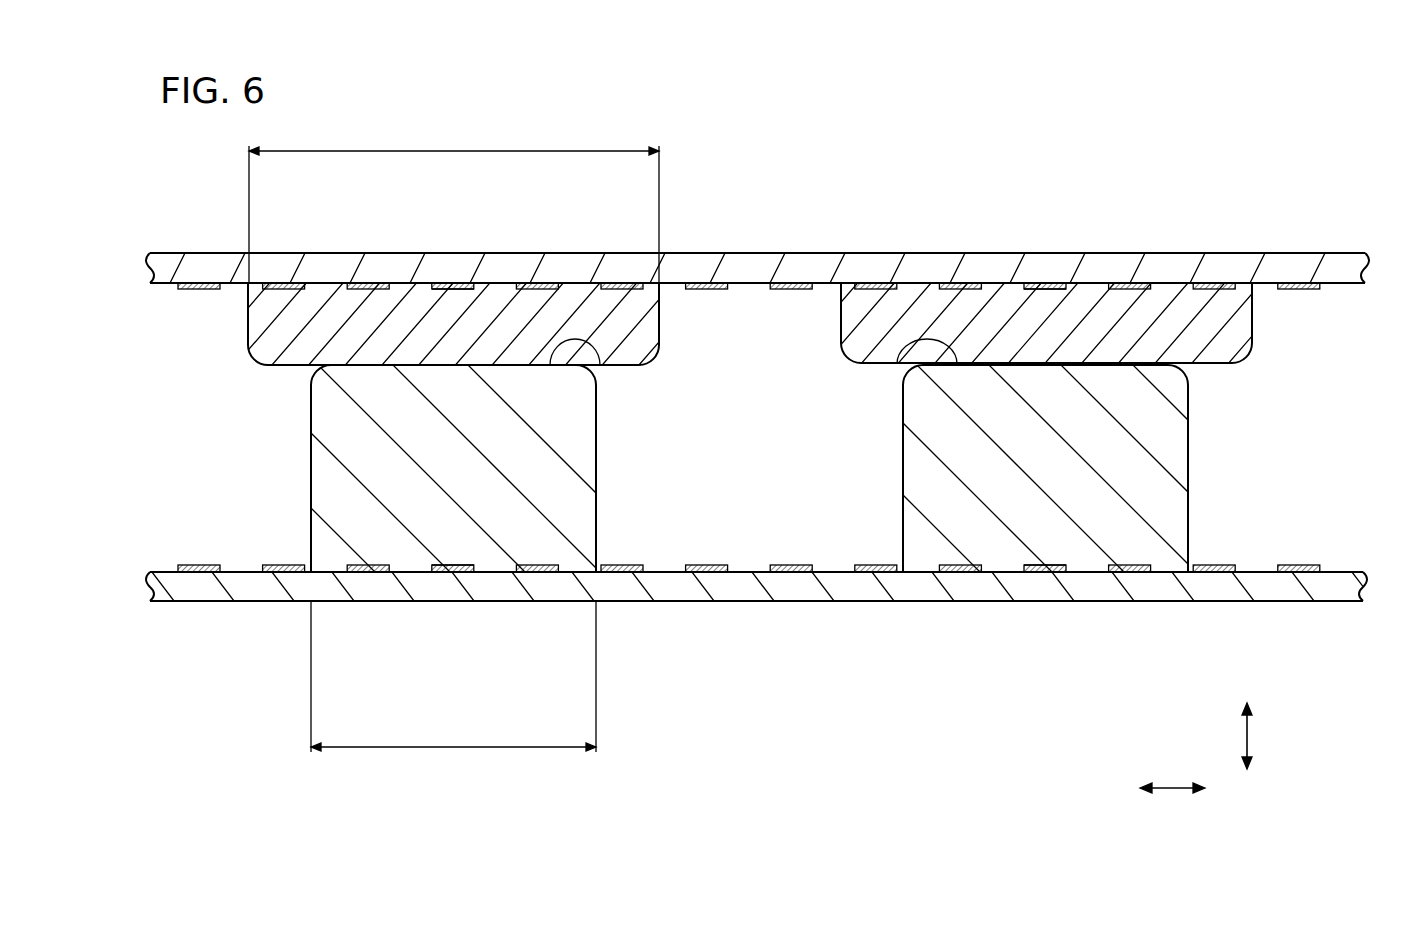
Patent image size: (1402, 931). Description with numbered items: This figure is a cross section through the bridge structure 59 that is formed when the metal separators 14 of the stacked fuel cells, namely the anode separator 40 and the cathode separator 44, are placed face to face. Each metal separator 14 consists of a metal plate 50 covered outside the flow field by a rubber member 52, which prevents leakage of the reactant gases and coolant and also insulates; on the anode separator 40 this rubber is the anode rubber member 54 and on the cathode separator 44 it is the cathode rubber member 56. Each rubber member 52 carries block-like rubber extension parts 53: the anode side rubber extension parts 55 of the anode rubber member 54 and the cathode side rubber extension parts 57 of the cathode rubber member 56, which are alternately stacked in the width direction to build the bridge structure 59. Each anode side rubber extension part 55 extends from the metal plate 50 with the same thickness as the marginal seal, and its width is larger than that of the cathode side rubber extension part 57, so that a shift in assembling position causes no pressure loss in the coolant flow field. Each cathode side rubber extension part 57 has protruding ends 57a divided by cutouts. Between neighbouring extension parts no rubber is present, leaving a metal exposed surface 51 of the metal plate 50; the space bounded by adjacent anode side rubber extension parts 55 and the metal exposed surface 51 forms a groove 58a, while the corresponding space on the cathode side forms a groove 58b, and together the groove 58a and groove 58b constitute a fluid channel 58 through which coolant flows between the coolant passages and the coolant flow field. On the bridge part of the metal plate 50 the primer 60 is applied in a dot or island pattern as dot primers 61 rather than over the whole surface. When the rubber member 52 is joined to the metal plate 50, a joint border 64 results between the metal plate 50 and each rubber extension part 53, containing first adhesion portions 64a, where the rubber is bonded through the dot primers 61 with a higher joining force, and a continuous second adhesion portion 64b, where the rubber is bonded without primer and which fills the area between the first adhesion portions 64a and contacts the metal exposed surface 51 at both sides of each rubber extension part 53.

The bridge structure 59 is at (168, 223).
The metal separator 14 is at (735, 431).
The anode separator 40 is at (164, 292).
The cathode separator 44 is at (165, 568).
The metal plate 50 is at (925, 268).
The metal exposed surface 51 is at (737, 290).
The rubber member 52 is at (714, 427).
The rubber extension part 53 is at (754, 427).
The anode rubber member 54 is at (240, 328).
The anode side rubber extension part 55 is at (645, 336).
The cathode rubber member 56 is at (302, 472).
The cathode side rubber extension part 57 is at (575, 485).
The protruding end 57a is at (600, 365).
The fluid channel 58 is at (817, 318).
The groove 58a is at (757, 310).
The groove 58b is at (755, 537).
The primer 60 is at (749, 434).
The dot primer 61 is at (552, 285).
The joint border 64 is at (470, 210).
The first adhesion portion 64a is at (448, 287).
The second adhesion portion 64b is at (403, 287).